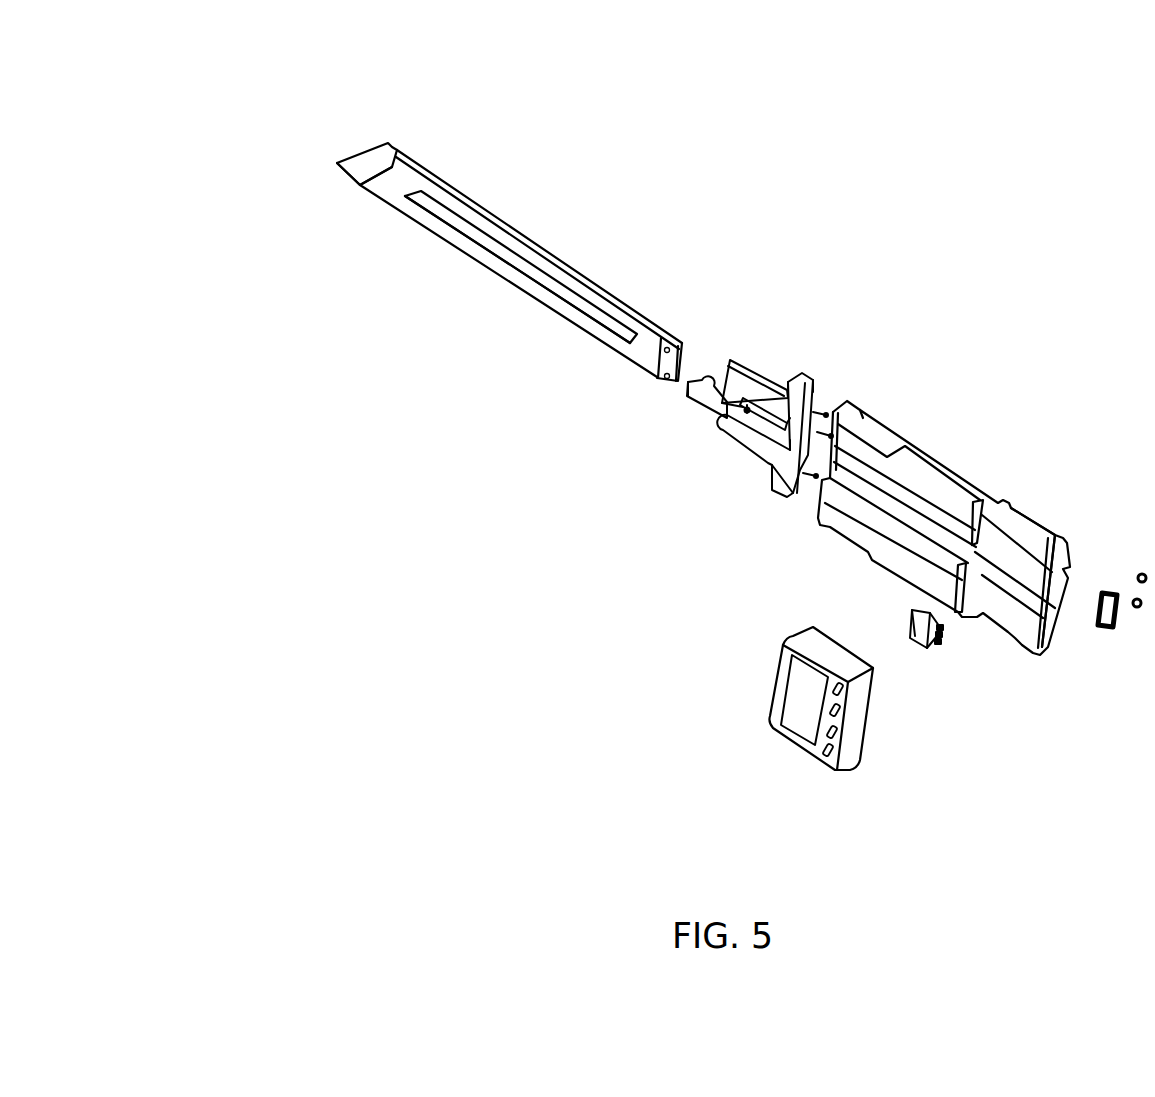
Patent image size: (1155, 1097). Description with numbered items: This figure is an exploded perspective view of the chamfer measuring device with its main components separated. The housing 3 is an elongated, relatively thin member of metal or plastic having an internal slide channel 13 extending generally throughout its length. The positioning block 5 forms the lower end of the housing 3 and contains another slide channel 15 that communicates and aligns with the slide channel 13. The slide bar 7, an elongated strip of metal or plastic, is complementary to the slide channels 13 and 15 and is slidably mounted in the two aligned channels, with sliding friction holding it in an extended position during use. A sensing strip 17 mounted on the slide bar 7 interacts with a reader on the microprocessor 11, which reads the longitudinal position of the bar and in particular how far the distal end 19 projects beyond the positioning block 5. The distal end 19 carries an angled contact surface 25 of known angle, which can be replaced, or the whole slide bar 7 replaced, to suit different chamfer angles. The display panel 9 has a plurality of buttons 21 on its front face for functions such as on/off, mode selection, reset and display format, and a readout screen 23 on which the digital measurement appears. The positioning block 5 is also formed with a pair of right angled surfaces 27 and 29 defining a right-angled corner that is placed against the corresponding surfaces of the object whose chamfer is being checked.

The housing 3 is at (947, 461).
The positioning block 5 is at (757, 362).
The slide bar 7 is at (537, 297).
The display panel 9 is at (870, 722).
The microprocessor 11 is at (912, 648).
The slide channel 13 is at (1025, 583).
The slide channel 15 is at (770, 440).
The sensing strip 17 is at (478, 255).
The distal end 19 is at (362, 168).
The buttons 21 is at (828, 752).
The readout screen 23 is at (802, 692).
The angled contact surface 25 is at (363, 152).
The right angled surface 27 is at (726, 367).
The right angled surface 29 is at (690, 380).